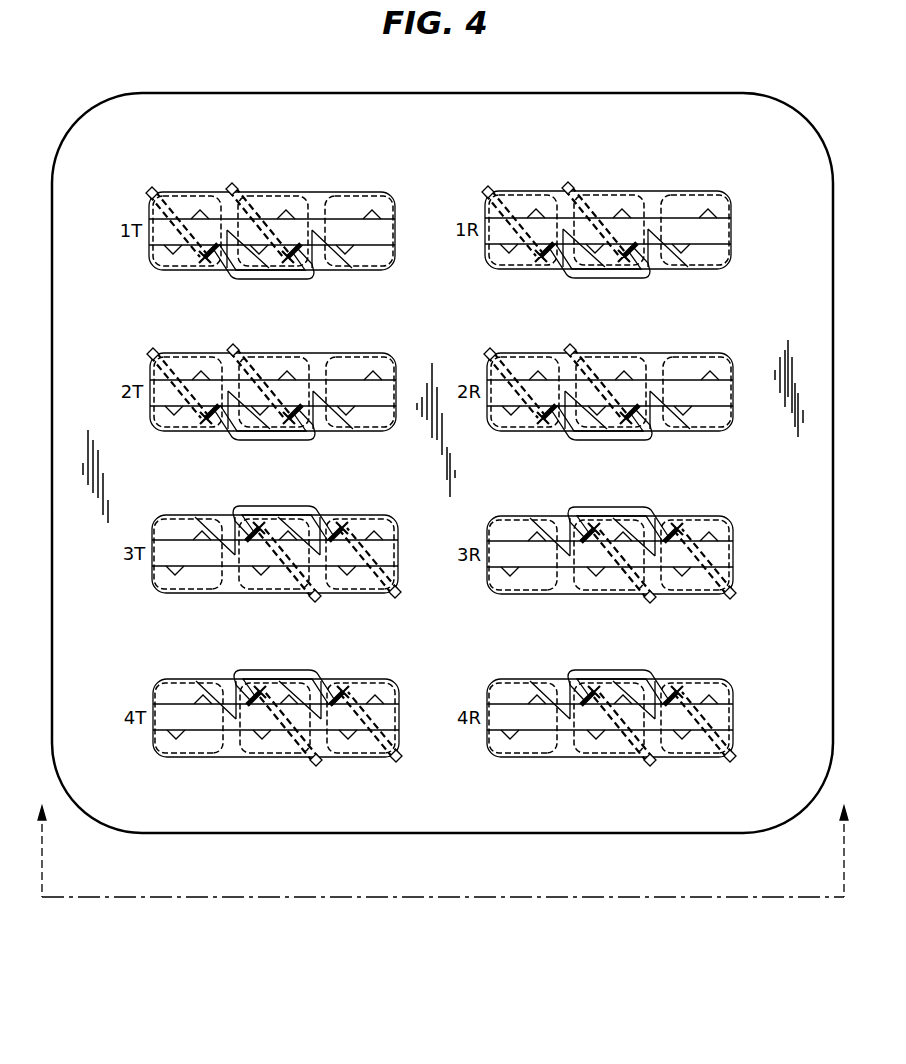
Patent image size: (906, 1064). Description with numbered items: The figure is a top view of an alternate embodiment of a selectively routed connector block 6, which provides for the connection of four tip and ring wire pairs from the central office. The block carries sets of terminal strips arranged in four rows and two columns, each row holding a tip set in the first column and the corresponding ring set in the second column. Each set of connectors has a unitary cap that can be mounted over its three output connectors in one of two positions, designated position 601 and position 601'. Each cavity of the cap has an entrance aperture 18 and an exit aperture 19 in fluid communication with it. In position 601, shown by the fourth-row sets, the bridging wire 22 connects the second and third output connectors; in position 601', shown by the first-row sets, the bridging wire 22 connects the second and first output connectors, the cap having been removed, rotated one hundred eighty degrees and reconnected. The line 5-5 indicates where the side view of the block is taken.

The connector block 6 is at (170, 93).
The line 5- 5 is at (443, 839).
The exit aperture 19 is at (163, 192).
The second position of cap 601' is at (440, 299).
The first position of cap 601 is at (457, 624).
The entrance aperture 18 is at (213, 270).
The bridging wire 22 is at (277, 284).